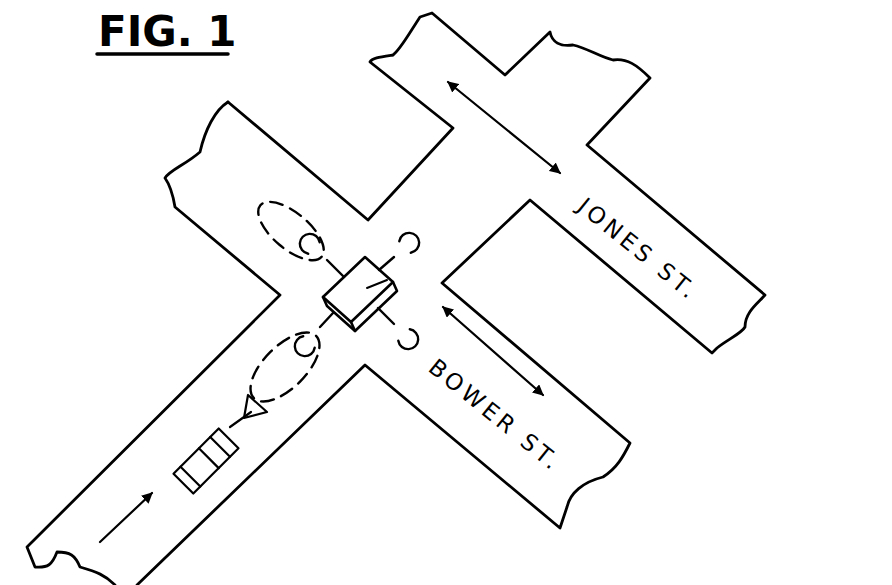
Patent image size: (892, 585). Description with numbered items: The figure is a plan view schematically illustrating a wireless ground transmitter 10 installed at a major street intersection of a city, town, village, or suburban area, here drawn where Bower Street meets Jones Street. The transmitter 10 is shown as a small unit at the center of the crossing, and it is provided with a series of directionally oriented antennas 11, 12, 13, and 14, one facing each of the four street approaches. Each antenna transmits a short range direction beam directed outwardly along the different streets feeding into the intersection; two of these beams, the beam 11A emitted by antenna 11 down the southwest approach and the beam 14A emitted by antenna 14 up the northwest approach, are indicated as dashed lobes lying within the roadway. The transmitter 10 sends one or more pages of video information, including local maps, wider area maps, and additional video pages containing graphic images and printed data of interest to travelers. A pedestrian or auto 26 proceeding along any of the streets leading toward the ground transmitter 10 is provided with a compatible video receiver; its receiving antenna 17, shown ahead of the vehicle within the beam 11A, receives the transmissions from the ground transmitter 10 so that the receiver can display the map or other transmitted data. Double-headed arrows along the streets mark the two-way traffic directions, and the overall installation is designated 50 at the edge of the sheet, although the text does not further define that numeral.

The wireless ground transmitter 10 is at (446, 284).
The directionally oriented antenna 11 is at (306, 328).
The short range direction beam 11A is at (294, 378).
The directionally oriented antenna 12 is at (399, 339).
The directionally oriented antenna 13 is at (411, 256).
The directionally oriented antenna 14 is at (331, 242).
The short range direction beam 14A is at (274, 220).
The receiving antenna 17 is at (256, 416).
The auto 26 is at (189, 487).
The intersection system 50 is at (488, 580).